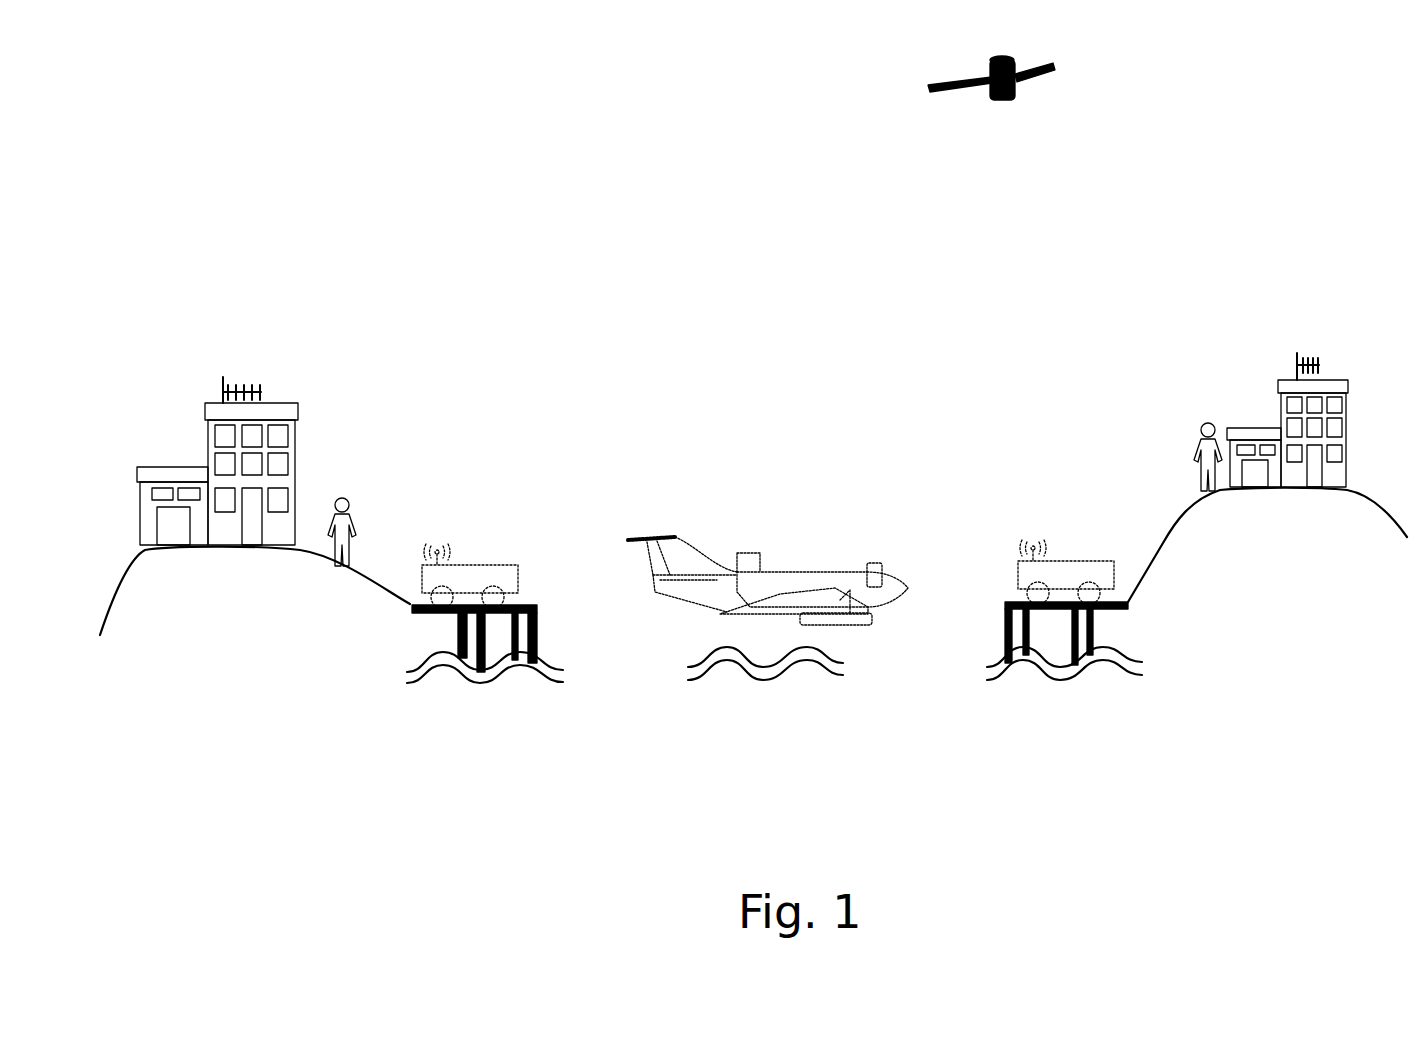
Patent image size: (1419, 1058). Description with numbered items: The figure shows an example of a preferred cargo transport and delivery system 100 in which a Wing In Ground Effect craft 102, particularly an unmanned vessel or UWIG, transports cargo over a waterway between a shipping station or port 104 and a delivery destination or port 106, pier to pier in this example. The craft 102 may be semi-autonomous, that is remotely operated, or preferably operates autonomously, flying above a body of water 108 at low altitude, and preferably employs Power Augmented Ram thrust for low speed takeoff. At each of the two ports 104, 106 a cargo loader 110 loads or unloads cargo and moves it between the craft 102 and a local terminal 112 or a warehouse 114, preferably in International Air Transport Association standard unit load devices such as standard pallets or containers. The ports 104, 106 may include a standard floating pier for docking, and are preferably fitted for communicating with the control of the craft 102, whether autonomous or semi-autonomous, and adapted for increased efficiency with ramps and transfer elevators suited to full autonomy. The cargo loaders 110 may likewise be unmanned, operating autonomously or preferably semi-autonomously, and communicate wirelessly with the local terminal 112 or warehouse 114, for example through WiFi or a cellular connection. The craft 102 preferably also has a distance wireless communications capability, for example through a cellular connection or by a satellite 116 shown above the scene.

The cargo transport and delivery system 100 is at (1098, 828).
The Wing In Ground Effect craft 102 is at (768, 568).
The shipping station or port 104 is at (537, 627).
The delivery destination or port 106 is at (1005, 602).
The body of water 108 is at (765, 684).
The cargo loader 110 is at (503, 561).
The local terminal 112 is at (190, 465).
The warehouse 114 is at (1347, 408).
The satellite 116 is at (1073, 68).